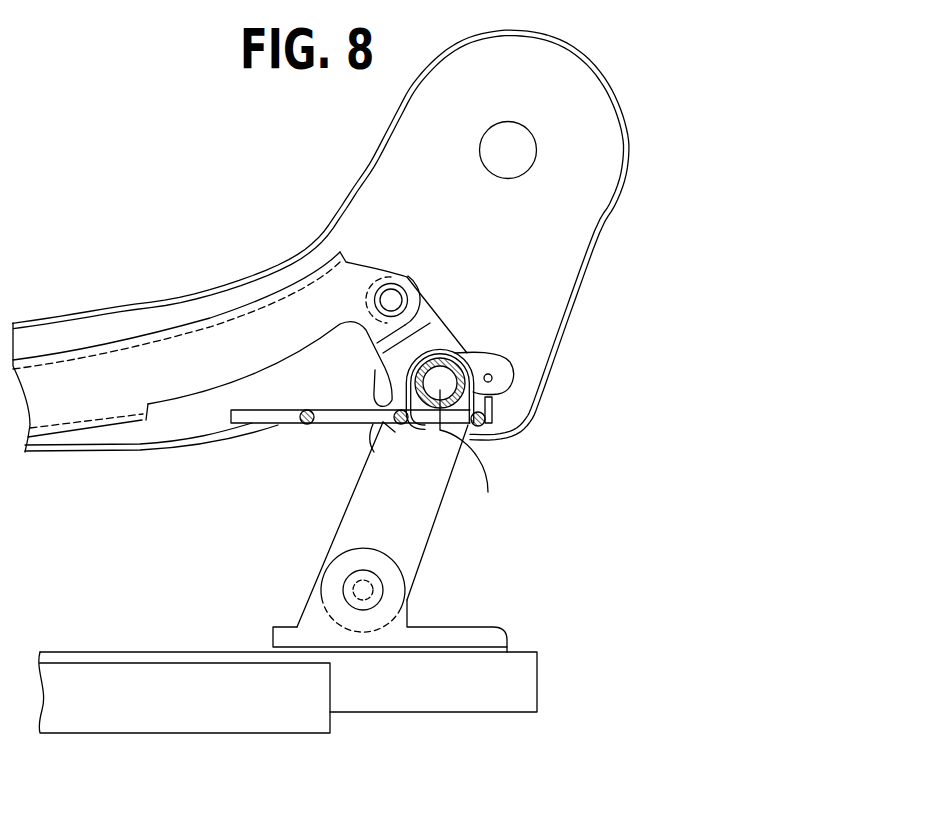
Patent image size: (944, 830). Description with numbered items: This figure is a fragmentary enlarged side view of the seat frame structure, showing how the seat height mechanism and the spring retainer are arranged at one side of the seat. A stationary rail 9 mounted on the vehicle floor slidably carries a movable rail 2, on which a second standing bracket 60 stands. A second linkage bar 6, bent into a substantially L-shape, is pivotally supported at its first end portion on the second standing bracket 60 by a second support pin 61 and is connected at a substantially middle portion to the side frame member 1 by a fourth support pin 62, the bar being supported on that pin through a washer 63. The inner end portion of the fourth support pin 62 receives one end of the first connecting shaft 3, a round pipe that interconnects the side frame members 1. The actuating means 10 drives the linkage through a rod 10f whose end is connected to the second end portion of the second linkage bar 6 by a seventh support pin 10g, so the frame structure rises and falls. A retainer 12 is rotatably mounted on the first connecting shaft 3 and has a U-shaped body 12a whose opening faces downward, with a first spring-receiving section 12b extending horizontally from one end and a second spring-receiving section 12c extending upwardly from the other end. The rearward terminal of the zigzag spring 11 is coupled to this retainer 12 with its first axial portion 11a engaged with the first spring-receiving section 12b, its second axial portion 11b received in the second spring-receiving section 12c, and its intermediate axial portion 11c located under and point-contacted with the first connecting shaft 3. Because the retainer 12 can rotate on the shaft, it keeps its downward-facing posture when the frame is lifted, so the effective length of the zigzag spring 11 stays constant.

The side frame member 1 is at (362, 184).
The movable rail 2 is at (497, 705).
The first connecting shaft 3 is at (466, 387).
The second linkage bar 6 is at (432, 541).
The stationary rail 9 is at (122, 718).
The actuating means 10 is at (162, 326).
The rod 10f is at (88, 372).
The seventh support pin 10g is at (392, 299).
The zigzag spring 11 is at (288, 426).
The first axial portion 11a is at (376, 402).
The second axial portion 11b is at (492, 427).
The intermediate axial portion 11c is at (421, 426).
The retainer 12 is at (449, 342).
The U-shaped body 12a is at (462, 355).
The first spring-receiving section 12b is at (383, 425).
The second spring-receiving section 12c is at (492, 420).
The second standing bracket 60 is at (297, 610).
The second support pin 61 is at (364, 592).
The fourth support pin 62 is at (474, 460).
The washer 63 is at (503, 357).